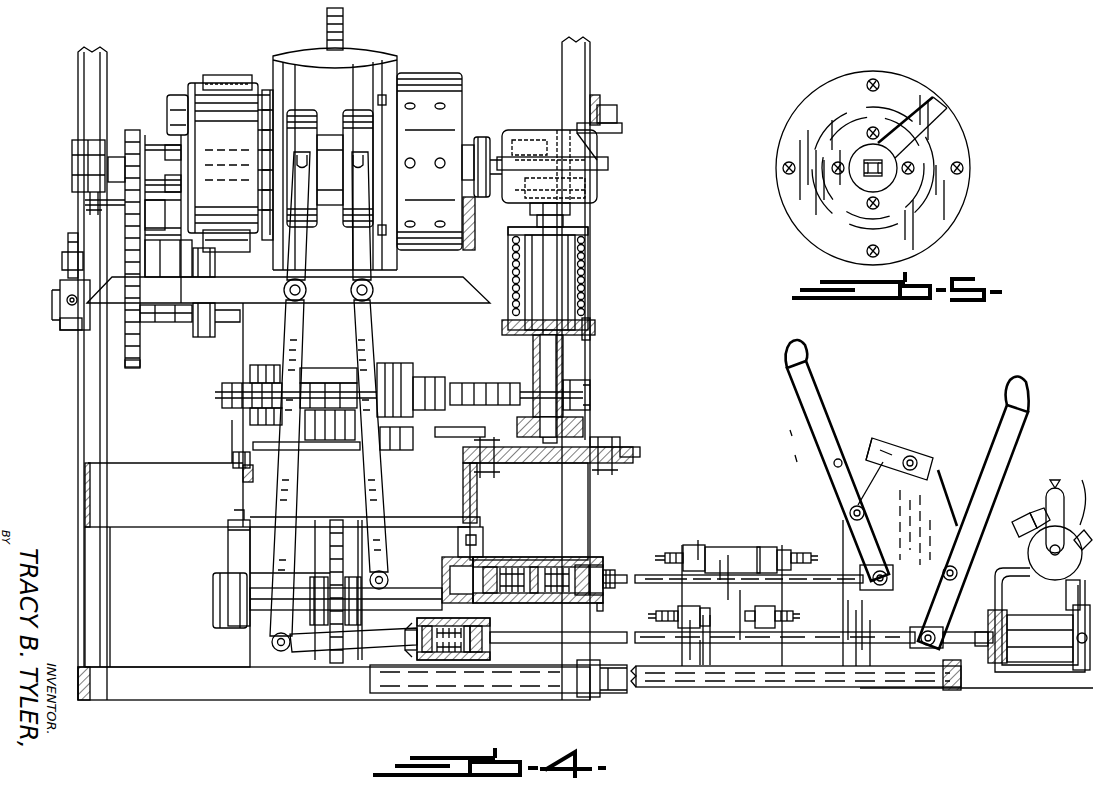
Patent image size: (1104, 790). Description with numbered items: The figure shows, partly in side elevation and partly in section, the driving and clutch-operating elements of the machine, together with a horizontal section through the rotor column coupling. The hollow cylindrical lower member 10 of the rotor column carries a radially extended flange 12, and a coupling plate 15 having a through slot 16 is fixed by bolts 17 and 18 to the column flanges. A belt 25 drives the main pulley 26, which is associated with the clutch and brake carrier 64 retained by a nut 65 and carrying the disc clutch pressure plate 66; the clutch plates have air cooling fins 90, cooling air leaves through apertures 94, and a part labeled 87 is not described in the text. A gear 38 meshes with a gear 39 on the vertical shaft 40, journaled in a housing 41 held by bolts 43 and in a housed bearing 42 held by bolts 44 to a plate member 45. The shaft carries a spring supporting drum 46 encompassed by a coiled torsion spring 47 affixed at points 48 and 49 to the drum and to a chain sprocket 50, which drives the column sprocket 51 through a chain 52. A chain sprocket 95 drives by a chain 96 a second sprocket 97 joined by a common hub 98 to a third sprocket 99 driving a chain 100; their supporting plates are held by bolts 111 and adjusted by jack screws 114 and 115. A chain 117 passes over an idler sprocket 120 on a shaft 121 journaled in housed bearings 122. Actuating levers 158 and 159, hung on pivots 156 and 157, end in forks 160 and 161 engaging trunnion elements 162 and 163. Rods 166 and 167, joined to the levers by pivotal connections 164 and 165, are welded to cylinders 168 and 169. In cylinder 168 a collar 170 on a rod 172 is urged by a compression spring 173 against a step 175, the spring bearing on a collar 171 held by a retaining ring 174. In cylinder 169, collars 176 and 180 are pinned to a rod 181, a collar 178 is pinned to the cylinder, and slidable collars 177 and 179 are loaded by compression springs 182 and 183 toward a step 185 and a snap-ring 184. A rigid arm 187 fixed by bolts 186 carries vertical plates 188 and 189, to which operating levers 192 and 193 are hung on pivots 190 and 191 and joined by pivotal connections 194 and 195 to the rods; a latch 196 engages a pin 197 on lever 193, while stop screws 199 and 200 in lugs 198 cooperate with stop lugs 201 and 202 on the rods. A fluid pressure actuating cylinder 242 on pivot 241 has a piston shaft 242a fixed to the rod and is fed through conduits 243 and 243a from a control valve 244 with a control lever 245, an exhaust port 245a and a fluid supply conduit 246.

In FIG. 4, the hollow cylindrical lower member 10 is at (278, 47).
In FIG. 4, the chain 117 is at (327, 22).
In FIG. 5, the chain 117 is at (888, 174).
In FIG. 4, the main pulley 26 is at (188, 85).
In FIG. 4, the belt 25 is at (214, 76).
In FIG. 4, the flange 87 is at (262, 95).
In FIG. 4, the air cooling fins 90 is at (170, 106).
In FIG. 4, the chain sprocket 95 is at (128, 140).
In FIG. 4, the jack screw 115 is at (262, 222).
In FIG. 4, the jack screw 114 is at (68, 300).
In FIG. 4, the bolts 111 is at (60, 320).
In FIG. 4, the chain 96 is at (150, 265).
In FIG. 4, the chain 100 is at (210, 265).
In FIG. 4, the common hub 98 is at (155, 322).
In FIG. 4, the third sprocket 99 is at (205, 337).
In FIG. 4, the second sprocket 97 is at (126, 368).
In FIG. 4, the two-pronged fork 160 is at (300, 180).
In FIG. 4, the trunnion element 162 is at (295, 163).
In FIG. 4, the two-pronged fork 161 is at (385, 178).
In FIG. 4, the trunnion element 163 is at (370, 162).
In FIG. 4, the actuating lever 158 is at (300, 331).
In FIG. 4, the actuating lever 159 is at (372, 331).
In FIG. 4, the pivot 156 is at (283, 290).
In FIG. 4, the pivot 157 is at (375, 290).
In FIG. 4, the clutch and brake carrier 64 is at (463, 93).
In FIG. 4, the apertures 94 is at (440, 103).
In FIG. 4, the disc clutch pressure plate 66 is at (385, 100).
In FIG. 4, the nut 65 is at (463, 148).
In FIG. 4, the gear 38 is at (520, 130).
In FIG. 4, the gear 39 is at (600, 180).
In FIG. 4, the housing 41 is at (598, 191).
In FIG. 4, the bolts 43 is at (615, 120).
In FIG. 4, the spring affixment point 48 is at (565, 222).
In FIG. 4, the spring supporting drum 46 is at (590, 232).
In FIG. 4, the vertical shaft 40 is at (558, 262).
In FIG. 4, the coiled torsion spring 47 is at (586, 277).
In FIG. 4, the spring affixment point 49 is at (590, 330).
In FIG. 4, the chain sprocket 50 is at (583, 390).
In FIG. 4, the housed bearing 42 is at (568, 425).
In FIG. 4, the bolts 44 is at (612, 440).
In FIG. 4, the plate member 45 is at (570, 465).
In FIG. 4, the chain sprocket 51 is at (415, 383).
In FIG. 4, the chain 52 is at (455, 383).
In FIG. 4, the housed bearings 122 is at (213, 593).
In FIG. 4, the rotatable shaft 121 is at (258, 620).
In FIG. 4, the rod 167 is at (410, 600).
In FIG. 4, the pivotal connection 164 is at (278, 648).
In FIG. 4, the pivotal connection 165 is at (382, 578).
In FIG. 4, the idler sprocket 120 is at (318, 628).
In FIG. 4, the rod 166 is at (345, 640).
In FIG. 4, the cylinder 169 is at (447, 560).
In FIG. 4, the shoulder or step 185 is at (460, 530).
In FIG. 4, the collar 177 is at (515, 604).
In FIG. 4, the collar 176 is at (490, 560).
In FIG. 4, the compression spring 182 is at (515, 565).
In FIG. 4, the collar 178 is at (537, 566).
In FIG. 4, the compression spring 183 is at (590, 558).
In FIG. 4, the collar 179 is at (598, 562).
In FIG. 4, the collar 180 is at (608, 572).
In FIG. 4, the rod 181 is at (638, 584).
In FIG. 4, the retaining snap-ring 184 is at (600, 603).
In FIG. 4, the cylinder 168 is at (430, 660).
In FIG. 4, the collar 170 is at (418, 645).
In FIG. 4, the shoulder or step 175 is at (422, 662).
In FIG. 4, the compression spring 173 is at (445, 662).
In FIG. 4, the collar 171 is at (457, 662).
In FIG. 4, the retaining ring 174 is at (478, 662).
In FIG. 4, the rod 172 is at (522, 645).
In FIG. 4, the bolts 186 is at (590, 695).
In FIG. 4, the arm 187 is at (670, 683).
In FIG. 4, the stop lug 201 is at (706, 628).
In FIG. 4, the vertical plate 188 is at (708, 545).
In FIG. 4, the stop lug 202 is at (748, 549).
In FIG. 4, the lugs 198 is at (776, 547).
In FIG. 4, the adjustable stop screws 200 is at (800, 548).
In FIG. 4, the adjustable stop screws 199 is at (788, 618).
In FIG. 4, the operating lever 193 is at (818, 392).
In FIG. 4, the pin 197 is at (833, 465).
In FIG. 4, the pivot 191 is at (864, 513).
In FIG. 4, the pivotal connection 195 is at (880, 585).
In FIG. 4, the latch 196 is at (880, 445).
In FIG. 4, the vertical plate 189 is at (948, 475).
In FIG. 4, the operating lever 192 is at (992, 428).
In FIG. 4, the pivot 190 is at (944, 572).
In FIG. 4, the pivotal connection 194 is at (918, 648).
In FIG. 4, the conduit 243 is at (1003, 568).
In FIG. 4, the conduit 243a is at (1066, 598).
In FIG. 4, the control lever 245 is at (1053, 490).
In FIG. 4, the exhaust port 245a is at (1082, 480).
In FIG. 4, the three-way fluid pressure control valve 244 is at (1046, 530).
In FIG. 4, the fluid supply conduit 246 is at (1030, 525).
In FIG. 4, the fluid pressure actuating cylinder 242 is at (1042, 660).
In FIG. 4, the piston shaft 242a is at (962, 645).
In FIG. 4, the pivot 241 is at (1083, 648).
In FIG. 5, the coupling plate 15 is at (952, 203).
In FIG. 5, the bolts 17 is at (874, 82).
In FIG. 5, the bolts 18 is at (833, 167).
In FIG. 5, the radially extended flange 12 is at (935, 110).
In FIG. 5, the through slot 16 is at (948, 118).